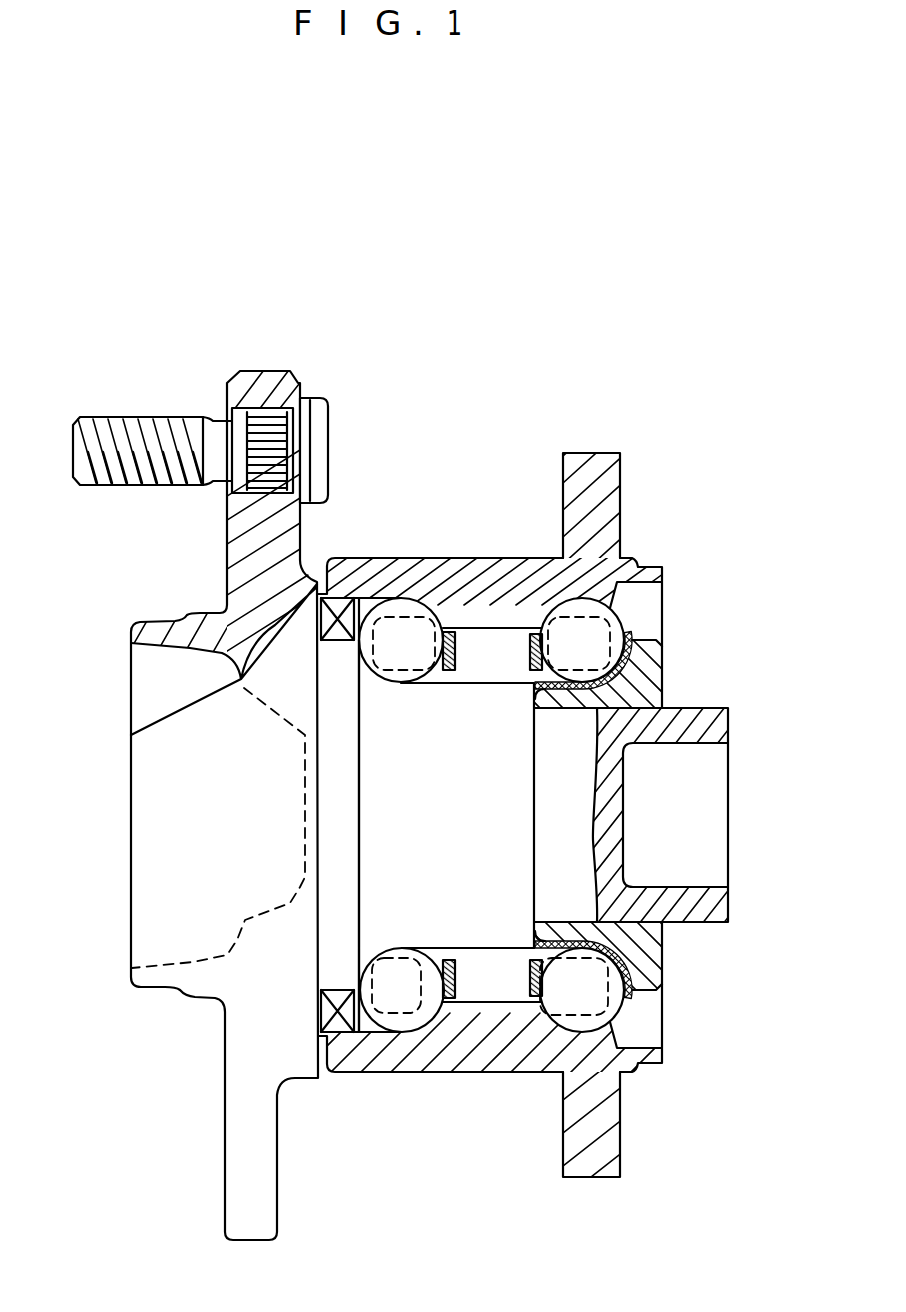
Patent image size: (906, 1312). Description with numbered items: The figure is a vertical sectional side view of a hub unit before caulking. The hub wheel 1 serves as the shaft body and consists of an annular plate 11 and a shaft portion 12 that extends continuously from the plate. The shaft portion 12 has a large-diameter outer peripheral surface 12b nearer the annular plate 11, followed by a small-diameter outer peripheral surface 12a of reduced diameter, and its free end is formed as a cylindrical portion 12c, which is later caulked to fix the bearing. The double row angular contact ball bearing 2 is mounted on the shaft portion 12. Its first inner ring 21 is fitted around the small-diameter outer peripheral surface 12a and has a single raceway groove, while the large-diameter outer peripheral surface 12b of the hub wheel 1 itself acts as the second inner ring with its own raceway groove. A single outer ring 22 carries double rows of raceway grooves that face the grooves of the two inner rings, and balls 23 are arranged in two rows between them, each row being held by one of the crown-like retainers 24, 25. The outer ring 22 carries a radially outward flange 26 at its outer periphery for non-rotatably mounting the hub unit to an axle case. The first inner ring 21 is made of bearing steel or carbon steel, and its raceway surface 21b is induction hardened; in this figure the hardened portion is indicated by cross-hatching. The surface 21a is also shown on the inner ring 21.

The hub wheel 1 is at (128, 858).
The annular plate 11 is at (262, 372).
The double row angular contact ball bearing 2 is at (496, 796).
The outer ring 22 is at (477, 796).
The flange 26 is at (592, 462).
The balls 23 is at (583, 604).
The crown-like retainer 24 is at (448, 671).
The crown-like retainer 25 is at (526, 661).
The first inner ring 21 is at (627, 772).
The inner ring raceway portion 21a is at (668, 704).
The raceway surface 21b is at (627, 634).
The shaft portion 12 is at (629, 838).
The small-diameter outer peripheral surface 12a is at (563, 887).
The large-diameter outer peripheral surface 12b is at (396, 888).
The cylindrical portion 12c is at (720, 708).